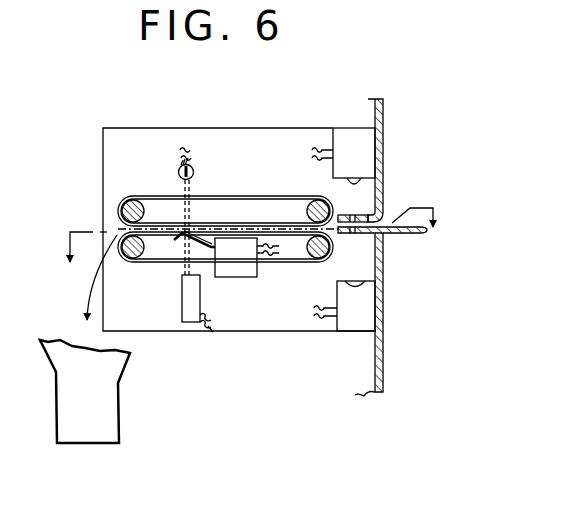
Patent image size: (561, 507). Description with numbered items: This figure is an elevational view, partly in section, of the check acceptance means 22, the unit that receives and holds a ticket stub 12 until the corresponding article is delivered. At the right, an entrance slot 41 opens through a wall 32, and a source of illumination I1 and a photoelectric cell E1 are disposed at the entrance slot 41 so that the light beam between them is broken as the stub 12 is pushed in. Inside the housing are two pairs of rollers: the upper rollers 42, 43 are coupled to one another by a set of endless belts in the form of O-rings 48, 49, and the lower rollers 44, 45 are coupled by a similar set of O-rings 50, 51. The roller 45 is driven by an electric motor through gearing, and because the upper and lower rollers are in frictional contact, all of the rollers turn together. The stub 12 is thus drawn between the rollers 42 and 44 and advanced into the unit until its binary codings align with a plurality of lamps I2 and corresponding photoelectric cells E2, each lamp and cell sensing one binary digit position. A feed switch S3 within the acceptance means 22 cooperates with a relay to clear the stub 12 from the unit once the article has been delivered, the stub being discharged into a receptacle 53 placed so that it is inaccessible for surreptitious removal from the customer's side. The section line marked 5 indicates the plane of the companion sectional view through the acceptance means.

The check acceptance means 22 is at (90, 208).
The wall 32 is at (381, 148).
The entrance slot 41 is at (376, 225).
The section line 5 is at (250, 248).
The O-ring 48 is at (229, 212).
The O-ring 49 is at (225, 247).
The roller 43 is at (131, 203).
The roller 42 is at (315, 201).
The roller 45 is at (136, 258).
The roller 44 is at (318, 257).
The lamp I2 is at (194, 168).
The stub 12 is at (207, 228).
The feed switch S3 is at (234, 272).
The O-ring 50 is at (291, 277).
The O-ring 51 is at (267, 262).
The photoelectric cell E2 is at (190, 318).
The source of illumination I1 is at (352, 143).
The photoelectric cell E1 is at (363, 317).
The receptacle 53 is at (97, 409).